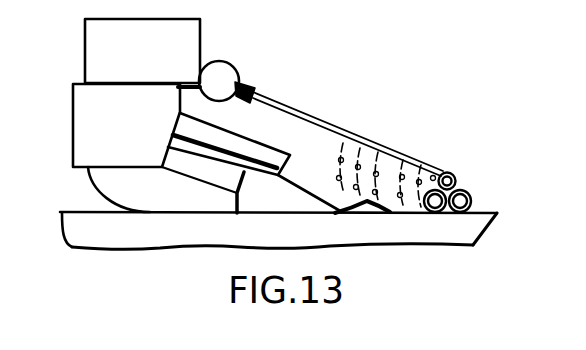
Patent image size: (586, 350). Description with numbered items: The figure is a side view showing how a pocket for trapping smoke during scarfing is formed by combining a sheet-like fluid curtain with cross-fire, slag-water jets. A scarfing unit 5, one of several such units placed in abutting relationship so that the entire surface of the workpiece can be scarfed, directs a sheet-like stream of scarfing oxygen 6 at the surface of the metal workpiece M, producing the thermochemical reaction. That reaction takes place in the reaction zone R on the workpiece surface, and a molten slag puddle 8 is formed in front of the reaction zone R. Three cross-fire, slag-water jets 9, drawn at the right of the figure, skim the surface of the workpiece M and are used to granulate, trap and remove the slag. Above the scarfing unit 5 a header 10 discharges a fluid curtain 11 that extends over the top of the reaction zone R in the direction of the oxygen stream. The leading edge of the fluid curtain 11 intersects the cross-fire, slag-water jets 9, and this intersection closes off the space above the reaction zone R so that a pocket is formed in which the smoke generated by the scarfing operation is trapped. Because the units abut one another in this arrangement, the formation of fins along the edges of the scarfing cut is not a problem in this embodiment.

The scarfing unit 5 is at (71, 126).
The header 10 is at (223, 74).
The fluid curtain 11 is at (286, 104).
The scarfing oxygen 6 is at (283, 173).
The metal workpiece M is at (153, 235).
The reaction zone R is at (348, 214).
The molten slag puddle 8 is at (383, 211).
The foam F is at (340, 148).
The cross-fire slag-water jets 9 is at (464, 191).